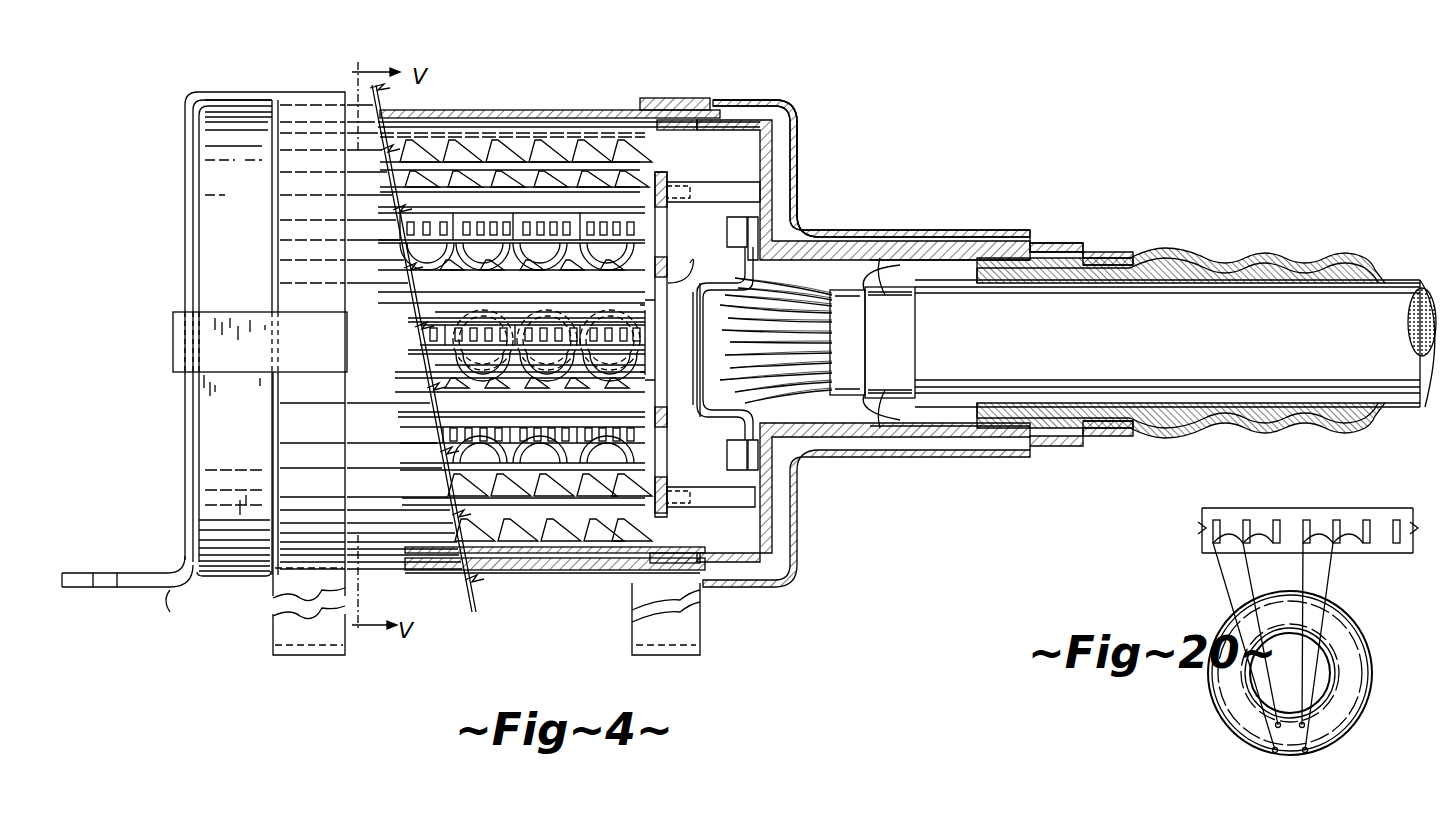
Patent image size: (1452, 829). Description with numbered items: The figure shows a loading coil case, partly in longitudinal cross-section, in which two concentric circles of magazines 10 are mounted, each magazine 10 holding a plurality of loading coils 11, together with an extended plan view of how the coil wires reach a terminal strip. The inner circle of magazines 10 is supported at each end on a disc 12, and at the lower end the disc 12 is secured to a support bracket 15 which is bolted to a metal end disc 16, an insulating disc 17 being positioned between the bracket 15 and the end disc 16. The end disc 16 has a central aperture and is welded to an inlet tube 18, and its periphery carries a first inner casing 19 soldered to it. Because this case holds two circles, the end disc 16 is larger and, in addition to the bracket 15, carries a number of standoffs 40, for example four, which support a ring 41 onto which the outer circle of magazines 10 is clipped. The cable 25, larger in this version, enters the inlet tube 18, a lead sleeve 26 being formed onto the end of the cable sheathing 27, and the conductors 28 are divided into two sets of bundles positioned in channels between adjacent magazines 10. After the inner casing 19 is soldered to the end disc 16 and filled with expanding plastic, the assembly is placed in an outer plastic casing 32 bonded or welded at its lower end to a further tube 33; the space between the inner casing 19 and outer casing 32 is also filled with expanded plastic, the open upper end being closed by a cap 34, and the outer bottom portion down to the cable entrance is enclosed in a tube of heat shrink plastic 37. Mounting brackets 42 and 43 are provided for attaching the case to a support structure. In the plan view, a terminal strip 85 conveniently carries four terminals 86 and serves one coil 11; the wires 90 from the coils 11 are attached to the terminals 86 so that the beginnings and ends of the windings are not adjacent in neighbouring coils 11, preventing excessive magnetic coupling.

In FIG. 4, the cap 34 is at (218, 155).
In FIG. 4, the mounting bracket 42 is at (272, 616).
In FIG. 4, the outer plastic casing 32 is at (512, 110).
In FIG. 4, the first inner casing 19 is at (530, 133).
In FIG. 4, the tube of heat shrink plastic 37 is at (588, 110).
In FIG. 4, the magazine 10 is at (612, 177).
In FIG. 4, the standoff 40 is at (720, 180).
In FIG. 4, the end disc 16 is at (790, 140).
In FIG. 4, the insulating disc 17 is at (800, 222).
In FIG. 4, the support bracket 15 is at (752, 235).
In FIG. 4, the conductors 28 is at (800, 300).
In FIG. 4, the further tube 33 is at (962, 240).
In FIG. 4, the inlet tube 18 is at (1062, 250).
In FIG. 4, the lead sleeve 26 is at (1225, 265).
In FIG. 4, the cable 25 is at (1425, 290).
In FIG. 4, the cable sheathing 27 is at (1180, 343).
In FIG. 4, the ring 41 is at (665, 175).
In FIG. 4, the disc 12 is at (668, 283).
In FIG. 4, the mounting bracket 43 is at (700, 642).
In FIG. 20, the terminal strip 85 is at (1380, 510).
In FIG. 20, the terminal 86 is at (1335, 518).
In FIG. 20, the loading coil 11 is at (1352, 645).
In FIG. 20, the wires 90 is at (1258, 575).